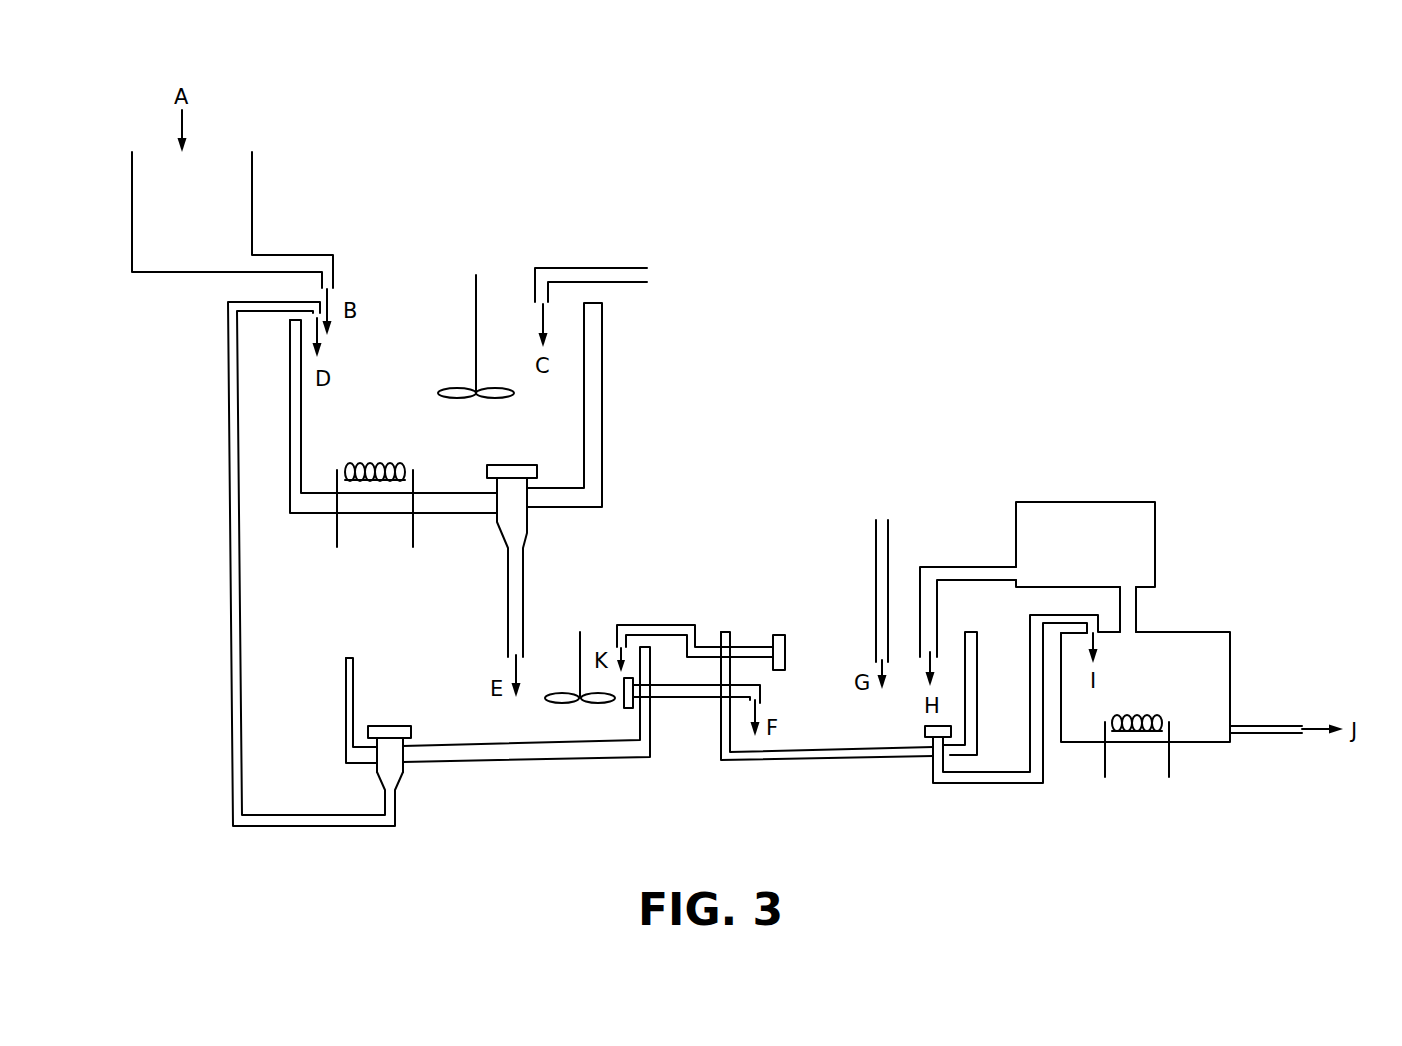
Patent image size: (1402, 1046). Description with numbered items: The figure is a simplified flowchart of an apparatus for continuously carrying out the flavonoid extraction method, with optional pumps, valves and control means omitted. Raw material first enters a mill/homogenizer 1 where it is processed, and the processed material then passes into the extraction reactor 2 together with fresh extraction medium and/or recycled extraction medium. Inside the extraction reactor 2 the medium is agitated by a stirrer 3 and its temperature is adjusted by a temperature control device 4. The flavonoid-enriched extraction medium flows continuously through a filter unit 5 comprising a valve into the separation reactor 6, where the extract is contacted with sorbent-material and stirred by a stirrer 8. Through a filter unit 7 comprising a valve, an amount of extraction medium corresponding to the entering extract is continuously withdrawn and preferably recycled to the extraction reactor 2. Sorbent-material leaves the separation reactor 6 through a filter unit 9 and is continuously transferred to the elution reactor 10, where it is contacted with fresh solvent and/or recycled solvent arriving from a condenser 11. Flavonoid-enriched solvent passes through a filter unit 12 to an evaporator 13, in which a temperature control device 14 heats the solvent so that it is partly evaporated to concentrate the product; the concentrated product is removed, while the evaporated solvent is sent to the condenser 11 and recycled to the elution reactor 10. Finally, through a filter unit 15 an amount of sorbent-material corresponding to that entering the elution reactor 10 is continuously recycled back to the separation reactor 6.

The mill/homogenizer 1 is at (132, 200).
The extraction reactor 2 is at (602, 393).
The stirrer 3 is at (476, 290).
The temperature control device 4 is at (337, 535).
The filter unit 5 is at (526, 537).
The separation reactor 6 is at (593, 760).
The filter unit 7 is at (403, 780).
The stirrer 8 is at (580, 648).
The filter unit 9 is at (622, 705).
The elution reactor 10 is at (812, 762).
The condenser 11 is at (1155, 533).
The filter unit 12 is at (925, 727).
The evaporator 13 is at (1230, 670).
The temperature control device 14 is at (1170, 762).
The filter unit 15 is at (775, 635).